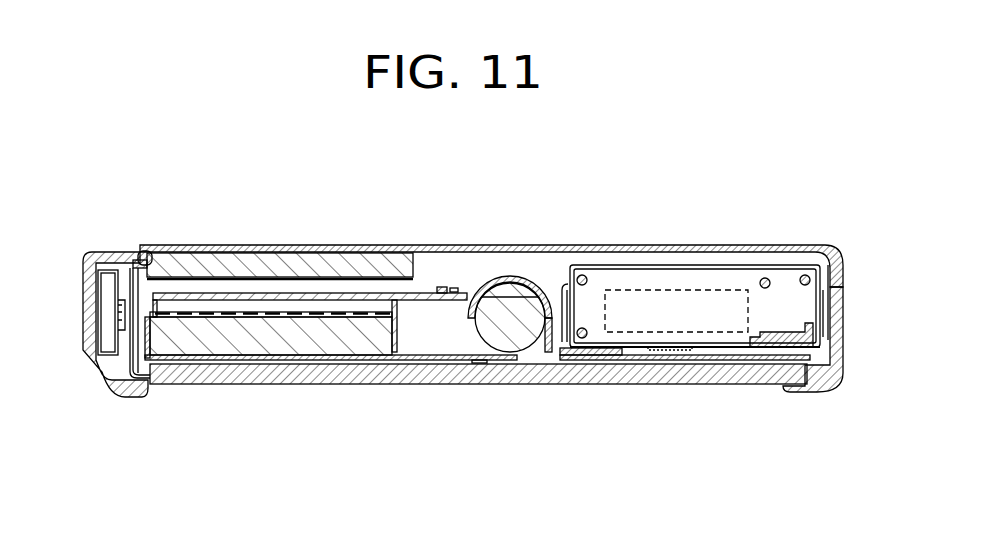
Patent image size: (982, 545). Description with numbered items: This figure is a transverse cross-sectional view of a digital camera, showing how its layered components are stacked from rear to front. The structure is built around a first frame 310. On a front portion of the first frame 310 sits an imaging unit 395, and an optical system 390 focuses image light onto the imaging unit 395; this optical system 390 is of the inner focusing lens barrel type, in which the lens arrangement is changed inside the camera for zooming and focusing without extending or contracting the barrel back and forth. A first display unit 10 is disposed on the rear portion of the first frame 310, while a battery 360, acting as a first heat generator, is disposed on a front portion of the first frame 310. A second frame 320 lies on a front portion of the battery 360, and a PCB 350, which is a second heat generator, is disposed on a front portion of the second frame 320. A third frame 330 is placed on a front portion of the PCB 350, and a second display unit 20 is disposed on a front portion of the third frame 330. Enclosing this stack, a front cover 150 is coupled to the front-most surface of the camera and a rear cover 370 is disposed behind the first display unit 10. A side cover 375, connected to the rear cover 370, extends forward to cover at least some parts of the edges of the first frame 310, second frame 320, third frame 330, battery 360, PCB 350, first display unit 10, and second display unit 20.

The first display unit 10 is at (580, 398).
The second display unit 20 is at (336, 258).
The front cover 150 is at (120, 253).
The first frame 310 is at (442, 344).
The second frame 320 is at (384, 295).
The third frame 330 is at (153, 297).
The PCB 350 is at (194, 315).
The battery 360 is at (243, 347).
The rear cover 370 is at (807, 408).
The side cover 375 is at (97, 385).
The optical system 390 is at (663, 258).
The imaging unit 395 is at (714, 288).